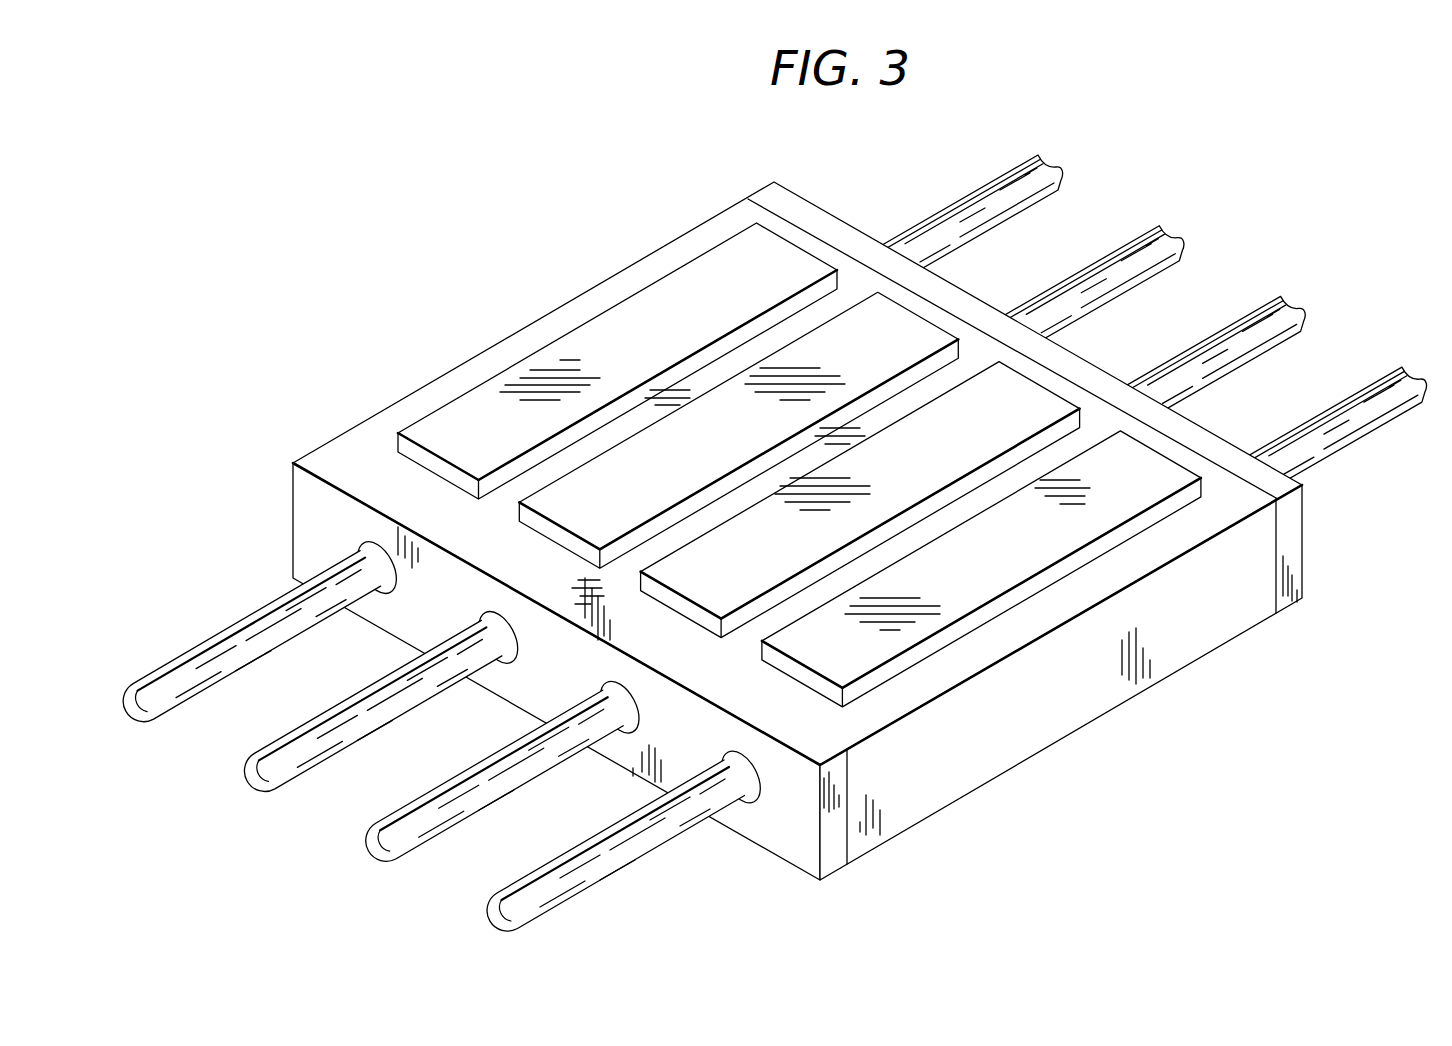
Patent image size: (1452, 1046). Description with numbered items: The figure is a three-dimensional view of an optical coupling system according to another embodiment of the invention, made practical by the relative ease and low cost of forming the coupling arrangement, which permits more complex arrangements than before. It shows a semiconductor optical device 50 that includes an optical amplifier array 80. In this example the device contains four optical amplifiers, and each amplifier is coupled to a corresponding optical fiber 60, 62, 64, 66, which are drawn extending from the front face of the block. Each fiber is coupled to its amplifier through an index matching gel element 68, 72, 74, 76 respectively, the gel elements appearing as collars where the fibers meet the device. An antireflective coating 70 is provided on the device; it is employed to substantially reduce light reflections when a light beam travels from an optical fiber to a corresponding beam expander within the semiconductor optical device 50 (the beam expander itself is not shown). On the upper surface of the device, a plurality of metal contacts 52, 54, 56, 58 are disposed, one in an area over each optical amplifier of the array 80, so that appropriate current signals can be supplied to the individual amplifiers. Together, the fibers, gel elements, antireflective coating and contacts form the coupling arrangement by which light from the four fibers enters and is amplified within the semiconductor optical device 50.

The optical amplifier array 80 is at (774, 523).
The semiconductor optical device 50 is at (1100, 703).
The metal contact 52 is at (1167, 462).
The metal contact 54 is at (1045, 403).
The metal contact 56 is at (928, 335).
The metal contact 58 is at (795, 258).
The optical fiber 60 is at (627, 852).
The optical fiber 62 is at (520, 773).
The optical fiber 64 is at (390, 712).
The optical fiber 66 is at (270, 645).
The index matching gel element 68 is at (750, 787).
The antireflective coating 70 is at (837, 858).
The index matching gel element 72 is at (638, 727).
The index matching gel element 74 is at (520, 655).
The index matching gel element 76 is at (396, 582).